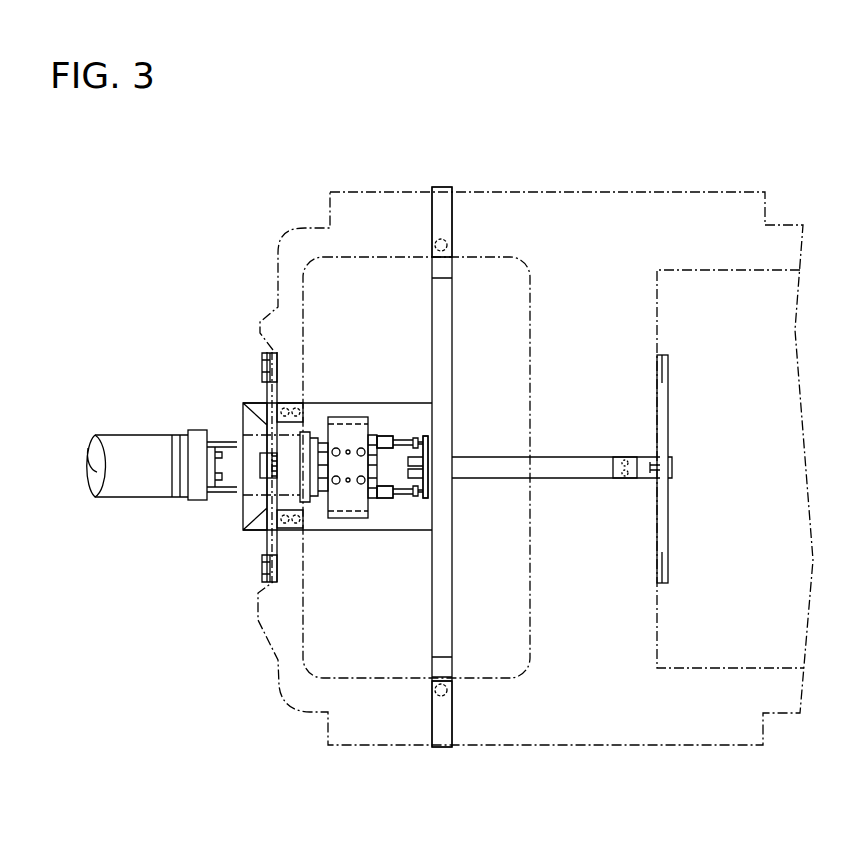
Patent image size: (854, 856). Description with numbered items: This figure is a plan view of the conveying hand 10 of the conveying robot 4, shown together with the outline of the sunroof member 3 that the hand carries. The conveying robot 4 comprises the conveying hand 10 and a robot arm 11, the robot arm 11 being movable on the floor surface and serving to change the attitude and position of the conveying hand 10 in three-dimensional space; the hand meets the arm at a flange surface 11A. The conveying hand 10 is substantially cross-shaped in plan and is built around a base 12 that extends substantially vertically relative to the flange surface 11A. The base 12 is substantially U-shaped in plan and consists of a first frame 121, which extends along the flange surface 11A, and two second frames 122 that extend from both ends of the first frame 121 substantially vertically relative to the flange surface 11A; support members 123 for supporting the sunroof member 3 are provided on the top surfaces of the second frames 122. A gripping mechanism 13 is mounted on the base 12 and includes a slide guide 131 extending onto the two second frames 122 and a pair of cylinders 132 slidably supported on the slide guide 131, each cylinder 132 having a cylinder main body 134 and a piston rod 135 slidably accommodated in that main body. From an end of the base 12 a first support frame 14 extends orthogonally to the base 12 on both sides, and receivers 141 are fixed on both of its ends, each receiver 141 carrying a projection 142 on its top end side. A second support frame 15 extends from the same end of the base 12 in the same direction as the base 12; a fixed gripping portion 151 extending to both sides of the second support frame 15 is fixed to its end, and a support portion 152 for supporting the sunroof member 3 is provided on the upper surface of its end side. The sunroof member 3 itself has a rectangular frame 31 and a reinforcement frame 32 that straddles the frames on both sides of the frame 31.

The sunroof member 3 is at (661, 178).
The conveying robot 4 is at (265, 165).
The conveying hand 10 is at (388, 143).
The robot arm 11 is at (140, 418).
The flange surface 11A is at (225, 472).
The base 12 is at (357, 338).
The gripping mechanism 13 is at (430, 447).
The first support frame 14 is at (445, 340).
The second support frame 15 is at (557, 463).
The frame 31 is at (278, 638).
The reinforcement frame 32 is at (658, 633).
The first frame 121 is at (250, 427).
The second frame 122 is at (342, 413).
The support member 123 is at (280, 402).
The slide guide 131 is at (337, 507).
The cylinder 132 is at (348, 367).
The cylinder main body 134 is at (387, 435).
The piston rod 135 is at (406, 435).
The receiver 141 is at (452, 218).
The projection 142 is at (441, 187).
The fixed gripping portion 151 is at (660, 393).
The support portion 152 is at (620, 460).